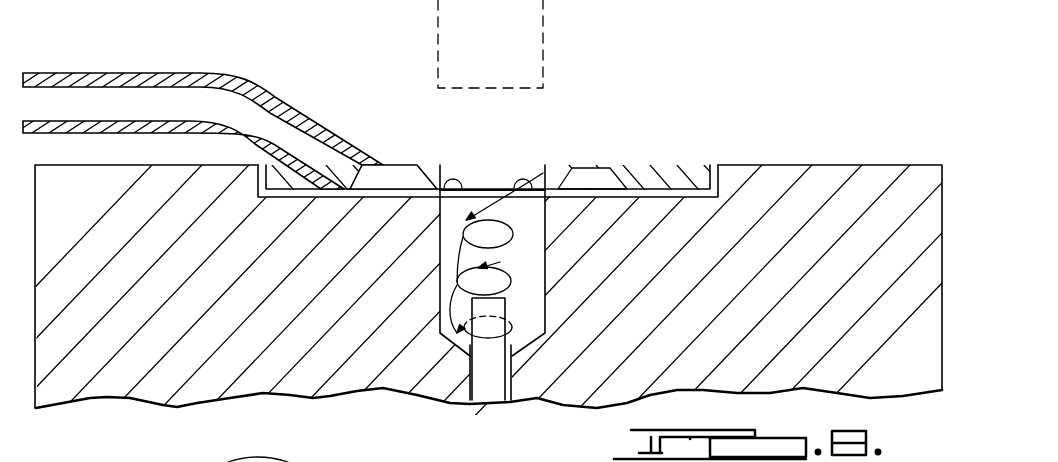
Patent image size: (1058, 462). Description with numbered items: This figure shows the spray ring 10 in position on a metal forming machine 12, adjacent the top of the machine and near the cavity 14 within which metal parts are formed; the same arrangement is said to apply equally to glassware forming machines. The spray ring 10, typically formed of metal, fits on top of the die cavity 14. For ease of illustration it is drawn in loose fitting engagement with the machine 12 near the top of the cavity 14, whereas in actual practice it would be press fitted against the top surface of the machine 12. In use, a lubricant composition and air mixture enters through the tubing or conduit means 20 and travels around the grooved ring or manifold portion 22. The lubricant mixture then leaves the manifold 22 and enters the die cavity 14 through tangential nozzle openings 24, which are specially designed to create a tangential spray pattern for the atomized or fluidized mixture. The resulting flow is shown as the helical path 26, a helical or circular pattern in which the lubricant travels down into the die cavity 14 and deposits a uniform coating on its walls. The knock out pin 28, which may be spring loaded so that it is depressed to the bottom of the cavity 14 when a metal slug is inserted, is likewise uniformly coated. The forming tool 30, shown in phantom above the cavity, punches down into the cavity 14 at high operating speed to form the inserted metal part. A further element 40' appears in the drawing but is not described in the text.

The spray ring 10 is at (652, 148).
The metal forming machine 12 is at (128, 413).
The cavity 14 is at (545, 258).
The tubing or conduit means 20 is at (130, 72).
The grooved ring or manifold portion 22 is at (615, 192).
The tangential nozzle openings 24 is at (540, 183).
The helical path 26 is at (462, 243).
The knock out pin 28 is at (492, 387).
The forming tool 30 is at (440, 18).
The adjacent assembly 40' is at (291, 449).